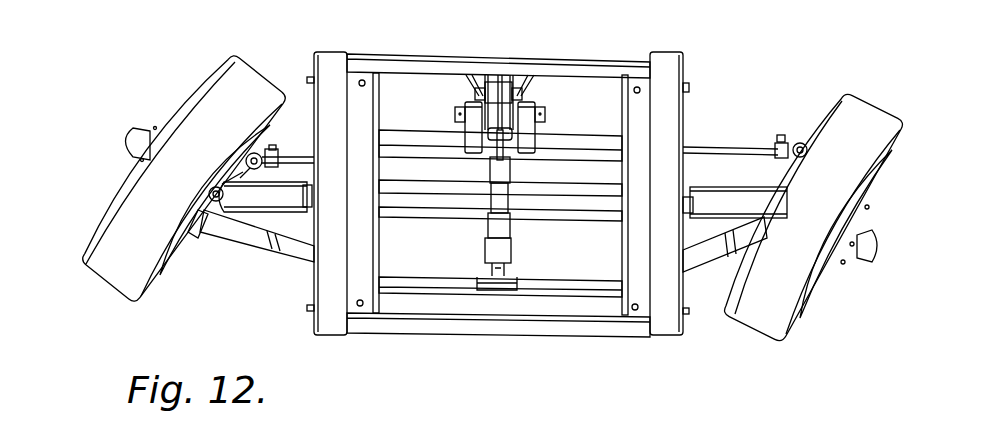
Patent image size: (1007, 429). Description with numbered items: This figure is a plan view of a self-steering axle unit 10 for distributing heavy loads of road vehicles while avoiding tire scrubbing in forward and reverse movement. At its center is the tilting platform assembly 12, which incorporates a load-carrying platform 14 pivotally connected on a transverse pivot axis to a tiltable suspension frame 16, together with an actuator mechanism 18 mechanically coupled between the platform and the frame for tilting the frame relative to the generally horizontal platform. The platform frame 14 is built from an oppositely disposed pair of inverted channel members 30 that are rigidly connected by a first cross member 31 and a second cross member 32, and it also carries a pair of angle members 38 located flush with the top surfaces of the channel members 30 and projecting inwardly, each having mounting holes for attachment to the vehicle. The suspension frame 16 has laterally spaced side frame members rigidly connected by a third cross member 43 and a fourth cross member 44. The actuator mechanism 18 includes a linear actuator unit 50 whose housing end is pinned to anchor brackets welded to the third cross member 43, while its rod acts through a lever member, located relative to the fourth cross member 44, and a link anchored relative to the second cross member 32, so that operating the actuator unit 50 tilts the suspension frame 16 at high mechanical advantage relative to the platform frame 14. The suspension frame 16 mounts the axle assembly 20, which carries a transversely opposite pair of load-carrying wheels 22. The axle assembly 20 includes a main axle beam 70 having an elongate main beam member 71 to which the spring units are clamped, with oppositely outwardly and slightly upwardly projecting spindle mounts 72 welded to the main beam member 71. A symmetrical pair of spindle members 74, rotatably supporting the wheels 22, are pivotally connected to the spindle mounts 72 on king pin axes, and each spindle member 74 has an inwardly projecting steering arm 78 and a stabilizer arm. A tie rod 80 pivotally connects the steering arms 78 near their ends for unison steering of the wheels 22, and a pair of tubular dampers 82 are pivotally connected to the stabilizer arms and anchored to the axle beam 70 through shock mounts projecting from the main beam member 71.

The axle unit 10 is at (262, 322).
The tilting platform assembly 12 is at (700, 365).
The load-carrying platform 14 is at (582, 337).
The suspension frame 16 is at (568, 277).
The actuator mechanism 18 is at (556, 102).
The axle assembly 20 is at (885, 272).
The load-carrying wheels 22 is at (238, 56).
The inverted channel members 30 is at (346, 286).
The first cross member 31 is at (490, 336).
The second cross member 32 is at (394, 55).
The angle members 38 is at (377, 98).
The third cross member 43 is at (433, 276).
The fourth cross member 44 is at (390, 130).
The linear actuator unit 50 is at (510, 238).
The main axle beam 70 is at (579, 233).
The main beam member 71 is at (457, 218).
The spindle mounts 72 is at (307, 172).
The spindle members 74 is at (213, 212).
The steering arm 78 is at (778, 162).
The tie rod 80 is at (764, 145).
The tubular dampers 82 is at (288, 264).